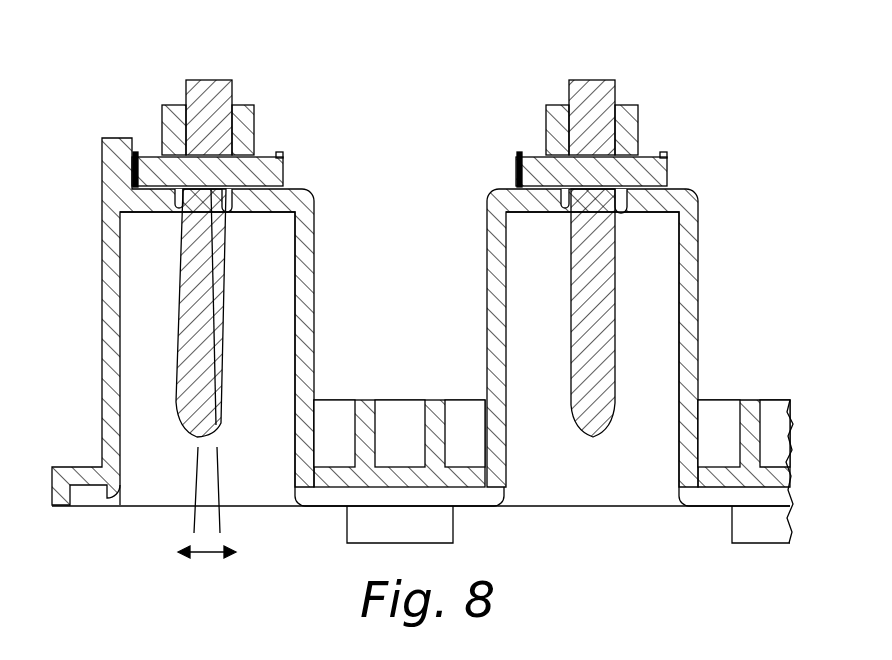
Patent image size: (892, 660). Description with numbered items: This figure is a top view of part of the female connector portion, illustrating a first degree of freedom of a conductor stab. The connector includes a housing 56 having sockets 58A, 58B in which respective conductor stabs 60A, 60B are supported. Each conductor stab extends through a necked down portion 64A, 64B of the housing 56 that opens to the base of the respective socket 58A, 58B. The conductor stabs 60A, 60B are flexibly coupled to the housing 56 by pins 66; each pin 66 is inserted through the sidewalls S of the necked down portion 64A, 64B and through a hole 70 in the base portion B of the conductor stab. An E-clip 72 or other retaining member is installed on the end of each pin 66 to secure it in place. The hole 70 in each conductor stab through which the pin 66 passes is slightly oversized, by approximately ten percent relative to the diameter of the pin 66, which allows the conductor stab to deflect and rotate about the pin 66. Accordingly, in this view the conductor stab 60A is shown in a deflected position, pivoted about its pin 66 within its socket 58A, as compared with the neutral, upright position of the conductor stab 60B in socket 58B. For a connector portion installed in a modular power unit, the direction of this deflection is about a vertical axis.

The housing 56 is at (314, 252).
The socket 58A is at (270, 315).
The socket 58B is at (657, 313).
The conductor stab 60A is at (192, 325).
The conductor stab 60B is at (585, 268).
The necked down portion 64A is at (209, 89).
The necked down portion 64B is at (559, 93).
The pin 66 is at (257, 172).
The hole 70 is at (190, 106).
The E-clip 72 is at (136, 155).
The base portion B is at (217, 102).
The sidewalls S is at (254, 143).